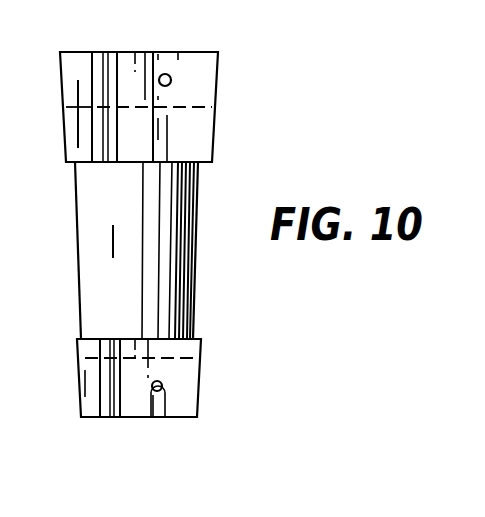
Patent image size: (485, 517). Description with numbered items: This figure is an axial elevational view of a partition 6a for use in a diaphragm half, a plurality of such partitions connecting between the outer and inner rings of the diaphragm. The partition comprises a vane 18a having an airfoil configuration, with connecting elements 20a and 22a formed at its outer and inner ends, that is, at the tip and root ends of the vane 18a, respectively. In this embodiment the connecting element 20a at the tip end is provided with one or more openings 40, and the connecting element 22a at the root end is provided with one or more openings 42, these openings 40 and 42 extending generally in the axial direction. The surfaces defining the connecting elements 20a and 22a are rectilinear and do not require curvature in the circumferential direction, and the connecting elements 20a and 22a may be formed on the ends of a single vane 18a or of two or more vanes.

The partition 6a is at (83, 206).
The vane 18a is at (100, 303).
The connecting element 20a is at (180, 60).
The connecting element 22a is at (185, 386).
The opening 40 is at (171, 84).
The opening 42 is at (160, 392).